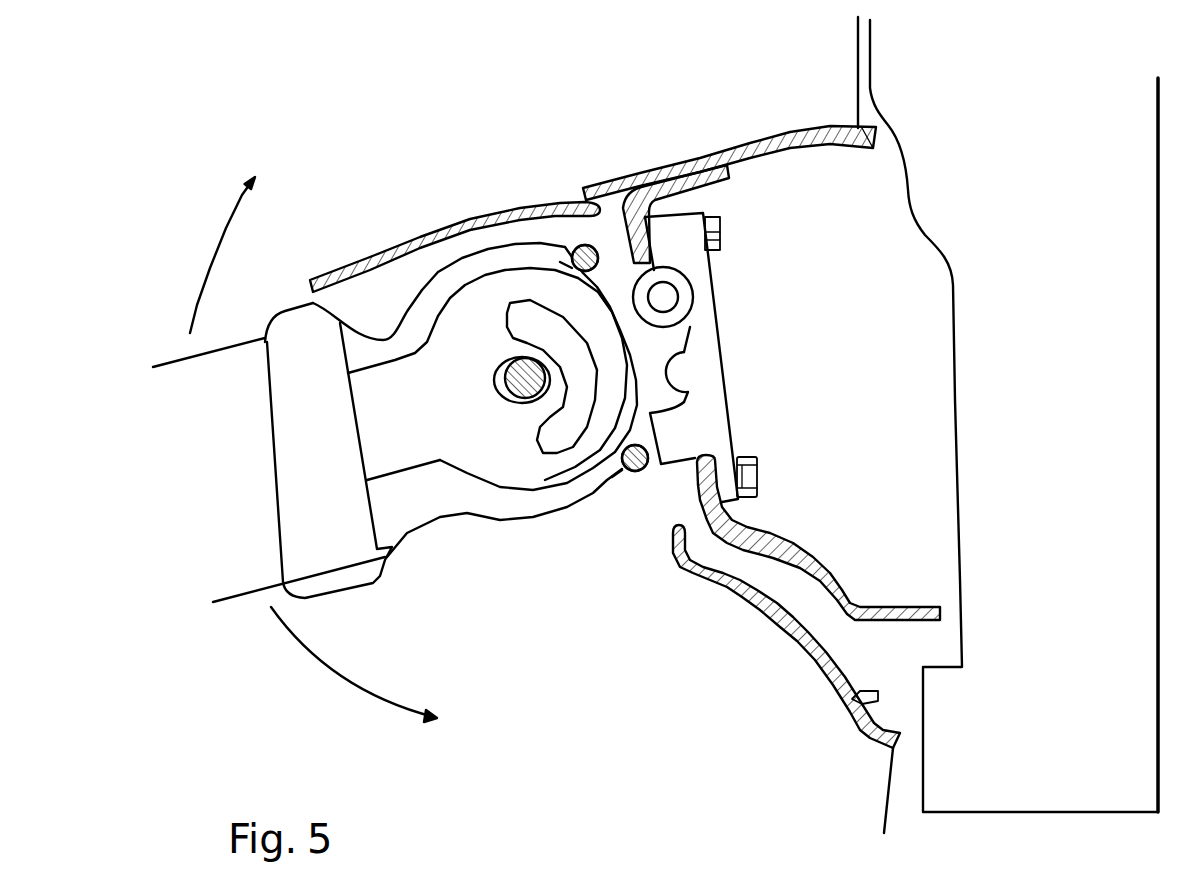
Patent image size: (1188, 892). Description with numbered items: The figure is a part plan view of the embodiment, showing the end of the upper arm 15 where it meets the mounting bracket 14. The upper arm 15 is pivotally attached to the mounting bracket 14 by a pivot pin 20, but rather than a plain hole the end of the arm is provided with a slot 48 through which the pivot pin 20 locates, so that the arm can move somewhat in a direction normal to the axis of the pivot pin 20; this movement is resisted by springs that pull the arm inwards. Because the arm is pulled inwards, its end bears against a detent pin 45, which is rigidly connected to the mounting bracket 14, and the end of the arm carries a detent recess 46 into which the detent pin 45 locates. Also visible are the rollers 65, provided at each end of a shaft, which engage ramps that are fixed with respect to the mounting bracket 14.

The mounting bracket 14 is at (747, 593).
The upper arm 15 is at (223, 343).
The pivot pin 20 is at (490, 370).
The detent pin 45 is at (583, 244).
The detent recess 46 is at (572, 266).
The slot 48 is at (500, 403).
The roller 65 is at (697, 323).